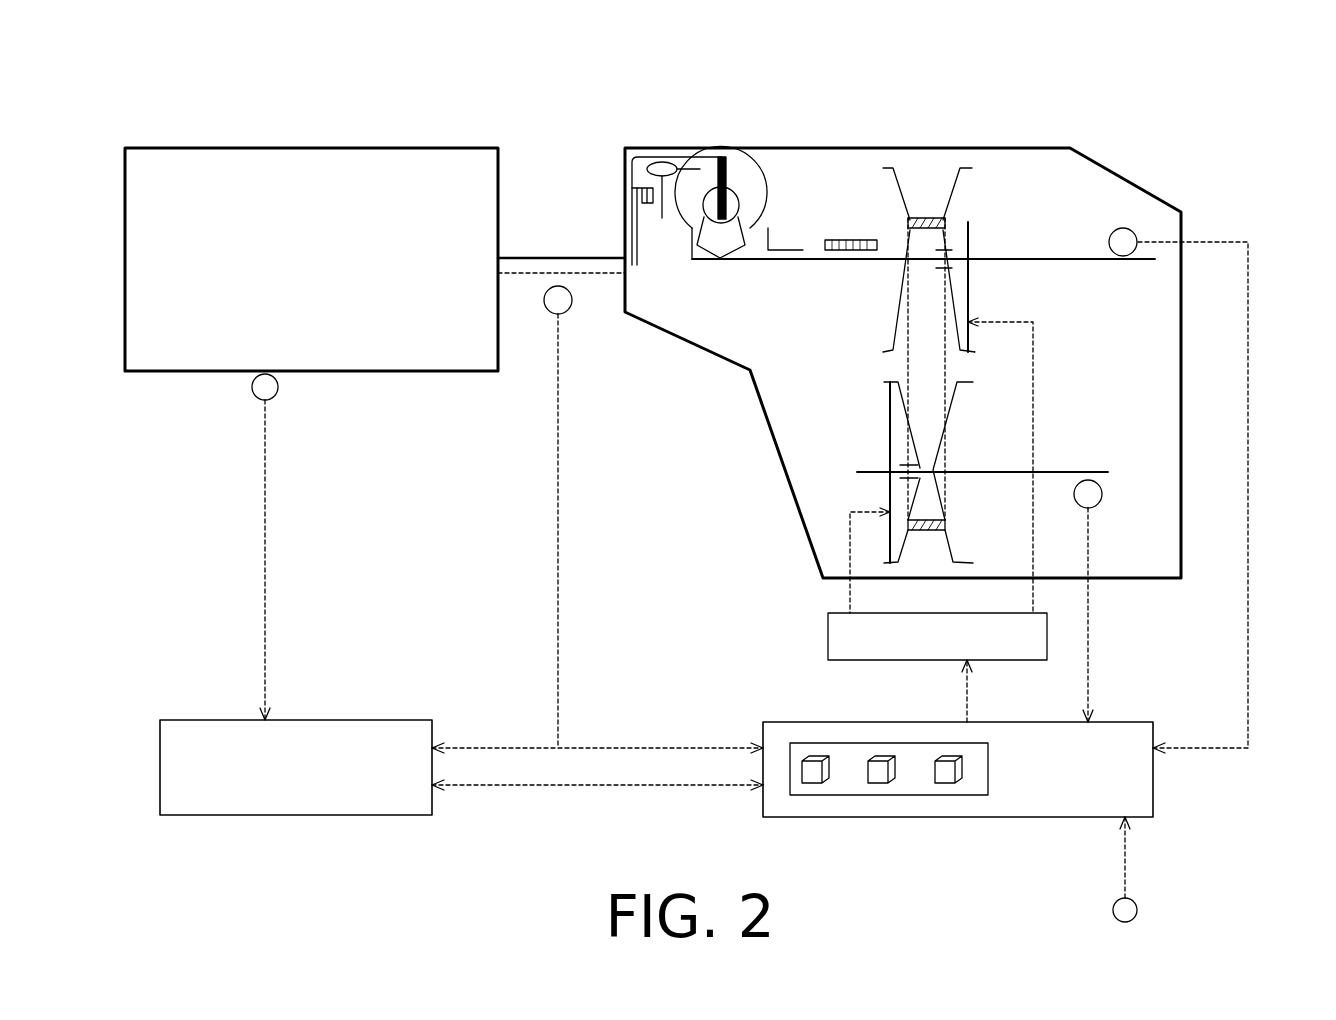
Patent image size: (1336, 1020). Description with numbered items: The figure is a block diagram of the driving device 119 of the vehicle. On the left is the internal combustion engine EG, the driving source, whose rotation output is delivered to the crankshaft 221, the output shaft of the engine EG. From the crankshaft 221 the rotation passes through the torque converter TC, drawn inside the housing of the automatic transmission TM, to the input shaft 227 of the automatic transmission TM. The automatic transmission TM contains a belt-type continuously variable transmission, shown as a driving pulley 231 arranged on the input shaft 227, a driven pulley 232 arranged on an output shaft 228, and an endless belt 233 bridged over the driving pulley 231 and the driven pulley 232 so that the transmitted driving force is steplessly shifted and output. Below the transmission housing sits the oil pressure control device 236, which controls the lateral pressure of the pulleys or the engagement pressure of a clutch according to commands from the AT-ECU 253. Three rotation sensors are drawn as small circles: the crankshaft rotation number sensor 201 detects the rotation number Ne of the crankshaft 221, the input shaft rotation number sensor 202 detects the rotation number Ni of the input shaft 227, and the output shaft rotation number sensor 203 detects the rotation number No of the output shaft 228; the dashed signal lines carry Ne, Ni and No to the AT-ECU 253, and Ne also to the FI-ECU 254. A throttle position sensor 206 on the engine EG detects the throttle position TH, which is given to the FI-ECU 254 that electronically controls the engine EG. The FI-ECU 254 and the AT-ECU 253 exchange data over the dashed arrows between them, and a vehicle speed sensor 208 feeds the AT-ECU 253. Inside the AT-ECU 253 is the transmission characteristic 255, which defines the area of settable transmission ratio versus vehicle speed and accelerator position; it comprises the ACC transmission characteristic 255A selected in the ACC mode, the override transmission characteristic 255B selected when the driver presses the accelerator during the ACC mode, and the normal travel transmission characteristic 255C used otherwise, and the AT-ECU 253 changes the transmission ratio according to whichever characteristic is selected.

The driving device 119 is at (953, 384).
The crankshaft 221 is at (521, 257).
The endless belt 233 is at (930, 218).
The input shaft 227 is at (1045, 258).
The input shaft rotation number sensor 202 is at (1131, 231).
The driving pulley 231 is at (878, 303).
The driven pulley 232 is at (878, 418).
The output shaft 228 is at (1070, 472).
The output shaft rotation number sensor 203 is at (1101, 490).
The crankshaft rotation number sensor 201 is at (549, 314).
The throttle position sensor 206 is at (260, 398).
The oil pressure control device 236 is at (828, 633).
The transmission characteristic 255 is at (882, 768).
The ACC transmission characteristic 255A is at (817, 783).
The override transmission characteristic 255B is at (883, 783).
The normal travel transmission characteristic 255C is at (950, 783).
The FI-ECU 254 is at (300, 818).
The AT-ECU 253 is at (958, 779).
The vehicle speed sensor 208 is at (1137, 910).
The engine EG is at (345, 148).
The torque converter TC is at (765, 165).
The automatic transmission TM is at (928, 148).
The rotation number of the crankshaft Ne is at (536, 531).
The throttle position TH is at (244, 560).
The rotation number of the input shaft Ni is at (1209, 497).
The rotation number of the output shaft No is at (1106, 615).